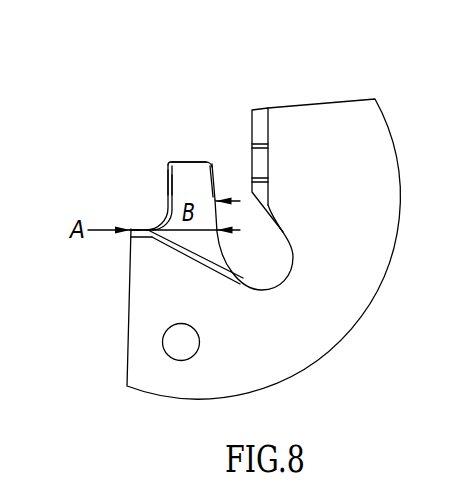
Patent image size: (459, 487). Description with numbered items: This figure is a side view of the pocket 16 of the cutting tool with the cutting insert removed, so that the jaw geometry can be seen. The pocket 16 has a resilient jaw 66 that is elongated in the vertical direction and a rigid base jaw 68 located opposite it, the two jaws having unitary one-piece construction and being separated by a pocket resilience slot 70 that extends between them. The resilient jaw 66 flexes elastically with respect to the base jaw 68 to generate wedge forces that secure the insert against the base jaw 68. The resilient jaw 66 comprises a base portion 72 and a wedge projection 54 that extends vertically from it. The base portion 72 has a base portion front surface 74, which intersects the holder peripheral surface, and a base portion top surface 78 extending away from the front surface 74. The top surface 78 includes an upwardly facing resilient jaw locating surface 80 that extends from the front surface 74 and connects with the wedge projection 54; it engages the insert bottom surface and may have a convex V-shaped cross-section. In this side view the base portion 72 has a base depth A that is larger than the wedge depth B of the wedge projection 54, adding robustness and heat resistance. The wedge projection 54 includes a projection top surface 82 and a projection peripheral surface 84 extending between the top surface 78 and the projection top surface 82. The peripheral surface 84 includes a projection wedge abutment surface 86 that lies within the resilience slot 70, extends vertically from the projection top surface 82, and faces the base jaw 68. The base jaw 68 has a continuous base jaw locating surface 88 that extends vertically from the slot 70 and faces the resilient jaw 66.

The pocket 16 is at (184, 69).
The wedge projection 54 is at (165, 168).
The resilient jaw 66 is at (172, 149).
The base jaw 68 is at (289, 134).
The pocket resilience slot 70 is at (245, 201).
The base portion 72 is at (128, 264).
The base portion front surface 74 is at (128, 297).
The base portion top surface 78 is at (131, 223).
The resilient jaw locating surface 80 is at (167, 201).
The projection top surface 82 is at (190, 162).
The projection peripheral surface 84 is at (169, 182).
The projection wedge abutment surface 86 is at (219, 163).
The base jaw locating surface 88 is at (260, 121).